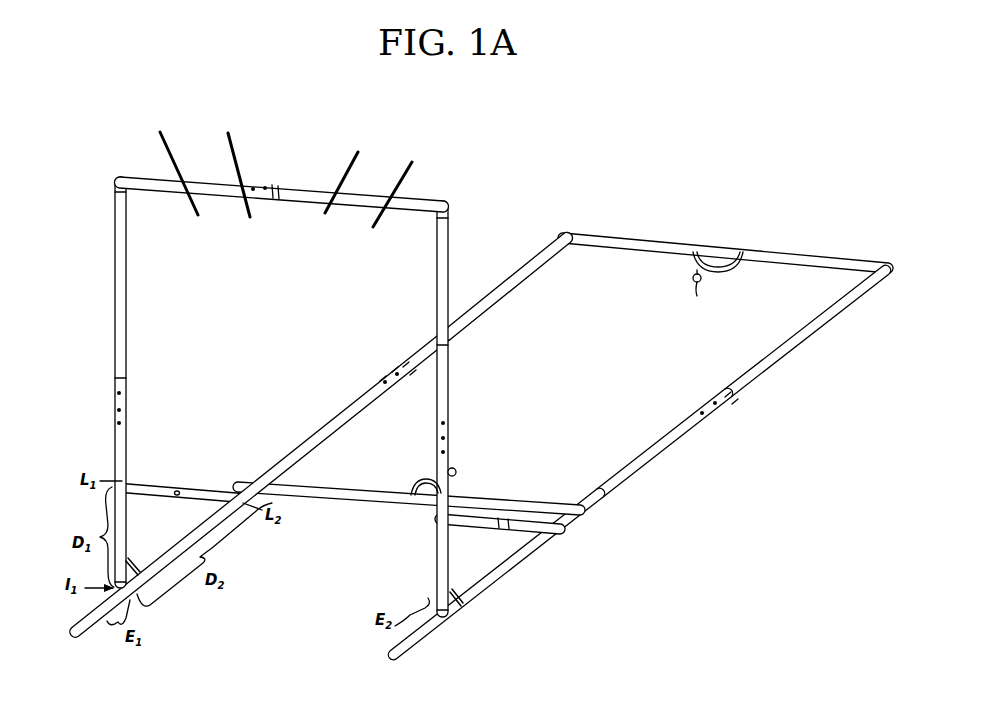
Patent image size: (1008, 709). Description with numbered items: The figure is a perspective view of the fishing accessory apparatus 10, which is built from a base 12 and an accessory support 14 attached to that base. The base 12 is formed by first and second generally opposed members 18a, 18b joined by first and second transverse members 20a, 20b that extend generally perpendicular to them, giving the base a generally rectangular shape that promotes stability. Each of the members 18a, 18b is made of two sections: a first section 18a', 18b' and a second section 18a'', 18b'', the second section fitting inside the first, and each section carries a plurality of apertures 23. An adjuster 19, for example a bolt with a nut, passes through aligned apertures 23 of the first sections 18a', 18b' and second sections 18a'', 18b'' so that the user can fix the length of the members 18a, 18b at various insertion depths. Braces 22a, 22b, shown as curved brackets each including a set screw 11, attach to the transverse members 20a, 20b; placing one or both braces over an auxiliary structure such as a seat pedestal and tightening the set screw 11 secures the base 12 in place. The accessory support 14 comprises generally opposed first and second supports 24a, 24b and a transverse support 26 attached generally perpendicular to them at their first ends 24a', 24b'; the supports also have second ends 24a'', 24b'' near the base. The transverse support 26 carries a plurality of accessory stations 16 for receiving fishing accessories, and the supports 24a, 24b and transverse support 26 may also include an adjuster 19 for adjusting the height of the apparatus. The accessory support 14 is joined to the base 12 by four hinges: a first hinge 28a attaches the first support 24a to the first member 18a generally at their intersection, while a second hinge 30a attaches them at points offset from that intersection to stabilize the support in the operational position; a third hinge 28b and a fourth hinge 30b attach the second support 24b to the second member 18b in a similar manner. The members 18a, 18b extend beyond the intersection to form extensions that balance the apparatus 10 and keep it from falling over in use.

The fishing accessory apparatus 10 is at (463, 384).
The set screw 11 is at (458, 471).
The base 12 is at (640, 434).
The accessory support 14 is at (408, 384).
The accessory stations 16 is at (187, 208).
The first member 18a is at (349, 344).
The first section of first member 18a' is at (261, 483).
The second section of first member 18a'' is at (478, 286).
The second member 18b is at (727, 432).
The first section of second member 18b' is at (539, 555).
The second section of second member 18b'' is at (806, 331).
The adjuster 19 is at (276, 184).
The first transverse member 20a is at (300, 497).
The second transverse member 20b is at (612, 240).
The brace 22a is at (415, 484).
The brace 22b is at (693, 260).
The apertures 23 is at (265, 188).
The first support 24a is at (91, 382).
The first end of first support 24a' is at (99, 163).
The second end of first support 24a'' is at (154, 623).
The second support 24b is at (467, 409).
The first end of second support 24b' is at (462, 194).
The second end of second support 24b'' is at (407, 596).
The transverse support 26 is at (292, 190).
The first hinge 28a is at (131, 563).
The third hinge 28b is at (460, 605).
The second hinge 30a is at (170, 488).
The fourth hinge 30b is at (512, 532).